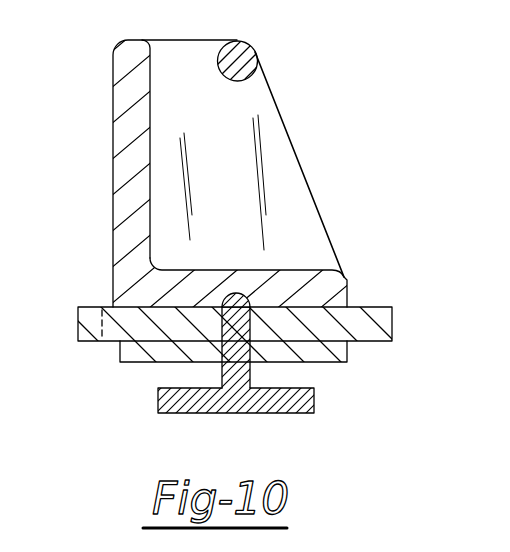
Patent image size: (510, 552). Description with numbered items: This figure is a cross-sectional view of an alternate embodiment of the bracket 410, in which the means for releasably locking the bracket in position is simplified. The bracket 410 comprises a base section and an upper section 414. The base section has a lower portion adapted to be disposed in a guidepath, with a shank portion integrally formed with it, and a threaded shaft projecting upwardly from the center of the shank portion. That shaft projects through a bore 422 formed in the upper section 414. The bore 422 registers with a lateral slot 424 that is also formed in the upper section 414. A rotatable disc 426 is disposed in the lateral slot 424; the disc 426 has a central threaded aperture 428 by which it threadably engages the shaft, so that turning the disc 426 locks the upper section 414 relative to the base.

The bracket 410 is at (397, 92).
The upper section 414 is at (308, 216).
The bore 422 is at (223, 348).
The lateral slot 424 is at (380, 307).
The rotatable disc 426 is at (393, 330).
The central threaded aperture 428 is at (252, 345).